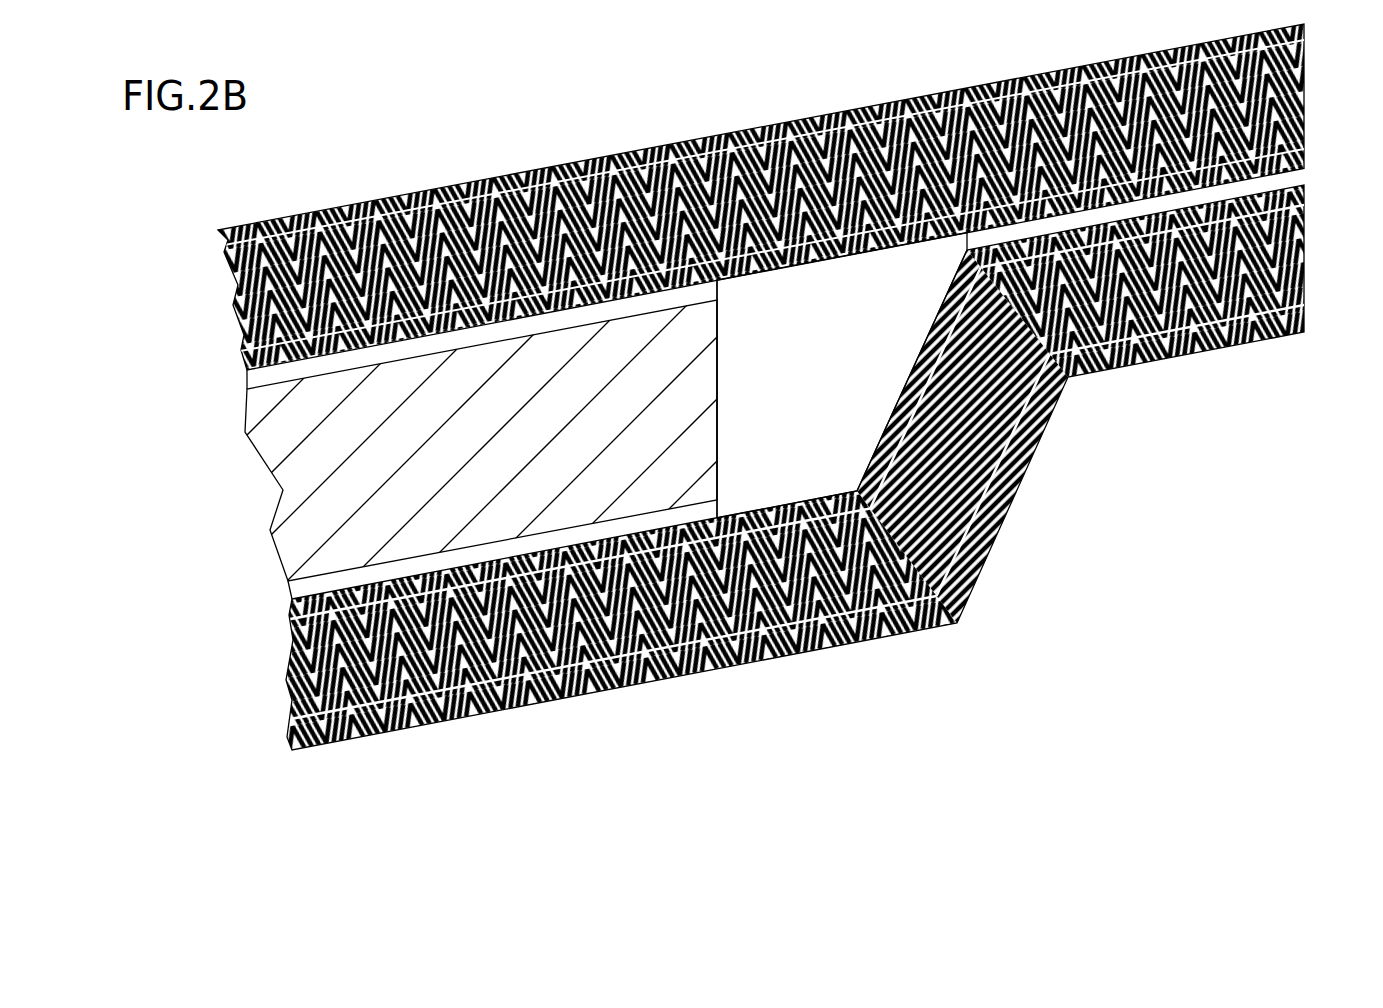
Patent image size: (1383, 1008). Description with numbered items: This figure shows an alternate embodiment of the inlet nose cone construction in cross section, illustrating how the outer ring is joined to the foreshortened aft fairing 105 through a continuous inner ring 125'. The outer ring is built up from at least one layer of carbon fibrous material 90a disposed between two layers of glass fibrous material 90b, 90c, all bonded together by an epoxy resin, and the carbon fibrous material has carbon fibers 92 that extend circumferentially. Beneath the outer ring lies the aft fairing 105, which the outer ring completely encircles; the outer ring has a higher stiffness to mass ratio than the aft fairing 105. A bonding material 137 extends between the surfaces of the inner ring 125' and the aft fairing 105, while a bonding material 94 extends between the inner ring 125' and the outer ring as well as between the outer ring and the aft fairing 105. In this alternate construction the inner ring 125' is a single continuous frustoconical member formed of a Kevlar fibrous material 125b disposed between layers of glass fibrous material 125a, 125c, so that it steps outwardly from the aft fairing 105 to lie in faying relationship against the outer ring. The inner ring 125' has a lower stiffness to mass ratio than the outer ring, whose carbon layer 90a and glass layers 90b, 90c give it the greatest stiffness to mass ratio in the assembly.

The carbon fibers 92 is at (830, 114).
The carbon fibrous material layer 90a is at (1307, 42).
The glass fibrous material layer 90b is at (1307, 22).
The glass fibrous material layer 90c is at (1307, 148).
The bonding material 94 is at (960, 243).
The aft fairing 105 is at (673, 412).
The bonding material 137 is at (730, 502).
The continuous inner ring 125' is at (792, 468).
The glass fibrous material 125a is at (1307, 183).
The Kevlar fibrous material 125b is at (1307, 207).
The glass fibrous material 125c is at (1307, 307).